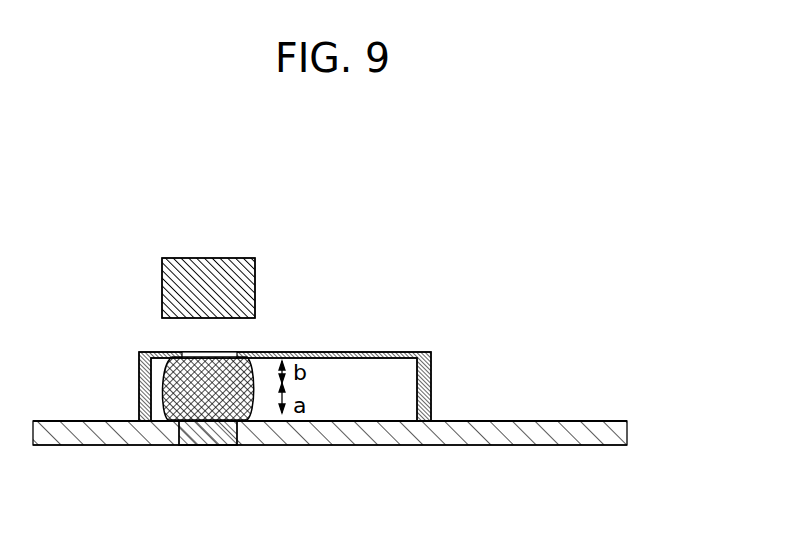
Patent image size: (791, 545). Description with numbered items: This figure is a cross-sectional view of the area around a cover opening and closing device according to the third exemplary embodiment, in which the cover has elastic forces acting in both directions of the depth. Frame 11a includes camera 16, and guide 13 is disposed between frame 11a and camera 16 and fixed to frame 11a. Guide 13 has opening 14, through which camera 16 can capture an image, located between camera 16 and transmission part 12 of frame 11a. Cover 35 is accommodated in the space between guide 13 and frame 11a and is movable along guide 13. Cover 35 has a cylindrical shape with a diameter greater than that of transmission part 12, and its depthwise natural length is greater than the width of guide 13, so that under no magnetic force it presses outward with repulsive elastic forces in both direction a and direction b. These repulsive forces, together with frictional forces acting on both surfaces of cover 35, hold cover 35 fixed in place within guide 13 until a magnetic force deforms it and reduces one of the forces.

The frame 11a is at (541, 446).
The transmission part 12 is at (202, 445).
The guide 13 is at (431, 368).
The opening 14 is at (183, 352).
The cover 35 is at (162, 402).
The camera 16 is at (255, 279).